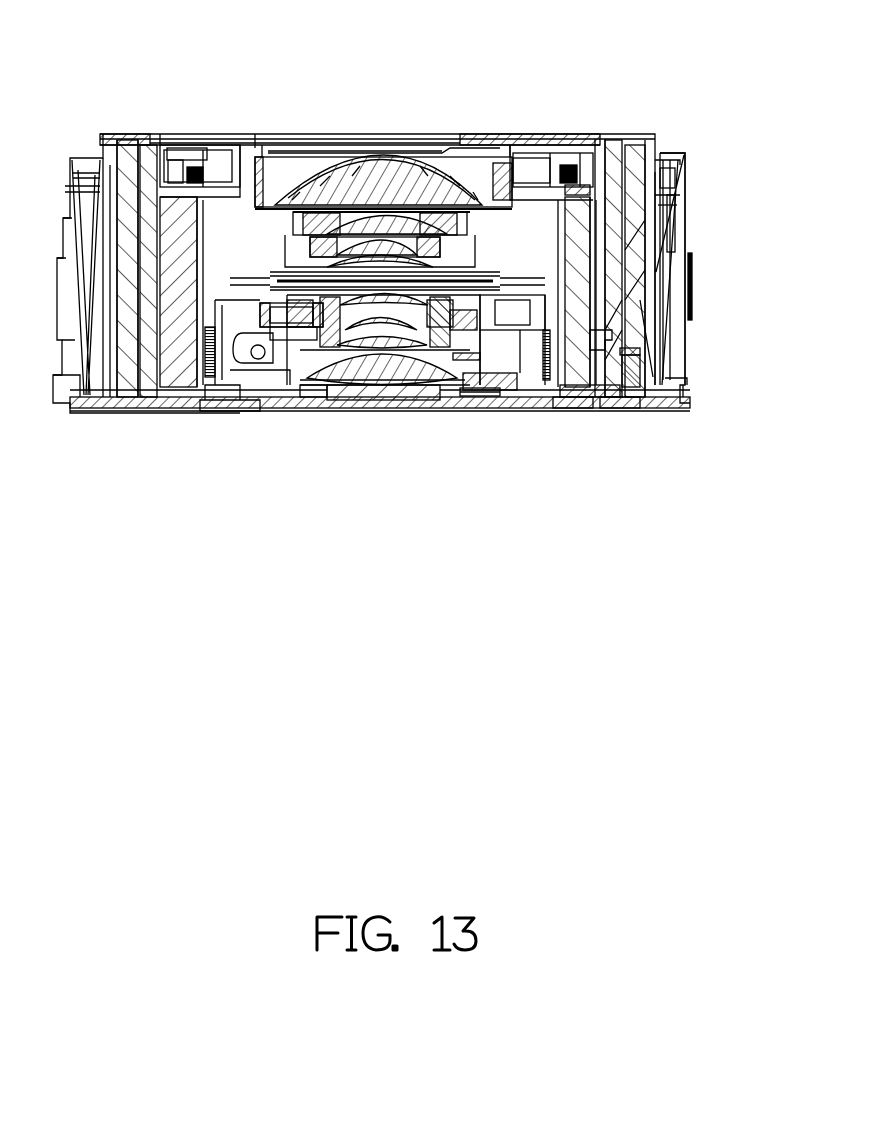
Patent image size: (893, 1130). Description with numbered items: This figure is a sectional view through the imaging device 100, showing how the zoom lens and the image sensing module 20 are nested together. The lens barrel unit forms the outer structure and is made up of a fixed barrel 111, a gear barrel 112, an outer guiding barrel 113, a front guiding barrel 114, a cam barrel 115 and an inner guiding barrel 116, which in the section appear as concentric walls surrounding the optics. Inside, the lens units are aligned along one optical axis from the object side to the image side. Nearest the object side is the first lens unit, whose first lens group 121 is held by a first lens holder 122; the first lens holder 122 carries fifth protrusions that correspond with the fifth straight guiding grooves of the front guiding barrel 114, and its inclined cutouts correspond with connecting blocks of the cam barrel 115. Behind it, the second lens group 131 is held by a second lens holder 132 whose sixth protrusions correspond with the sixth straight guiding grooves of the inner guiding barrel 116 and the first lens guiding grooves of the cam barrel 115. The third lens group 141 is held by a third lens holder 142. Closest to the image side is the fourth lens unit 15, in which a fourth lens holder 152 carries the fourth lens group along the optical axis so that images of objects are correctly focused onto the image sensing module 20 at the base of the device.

The imaging device 100 is at (147, 53).
The second lens holder 132 is at (206, 172).
The second lens group 131 is at (320, 223).
The first lens group 121 is at (397, 173).
The first lens holder 122 is at (658, 141).
The outer guiding barrel 113 is at (598, 200).
The front guiding barrel 114 is at (625, 226).
The fixed barrel 111 is at (684, 256).
The gear barrel 112 is at (690, 290).
The third lens holder 142 is at (222, 412).
The third lens group 141 is at (332, 386).
The fourth lens unit 15 is at (363, 386).
The image sensing module 20 is at (412, 386).
The fourth lens holder 152 is at (475, 386).
The inner guiding barrel 116 is at (565, 409).
The cam barrel 115 is at (613, 409).